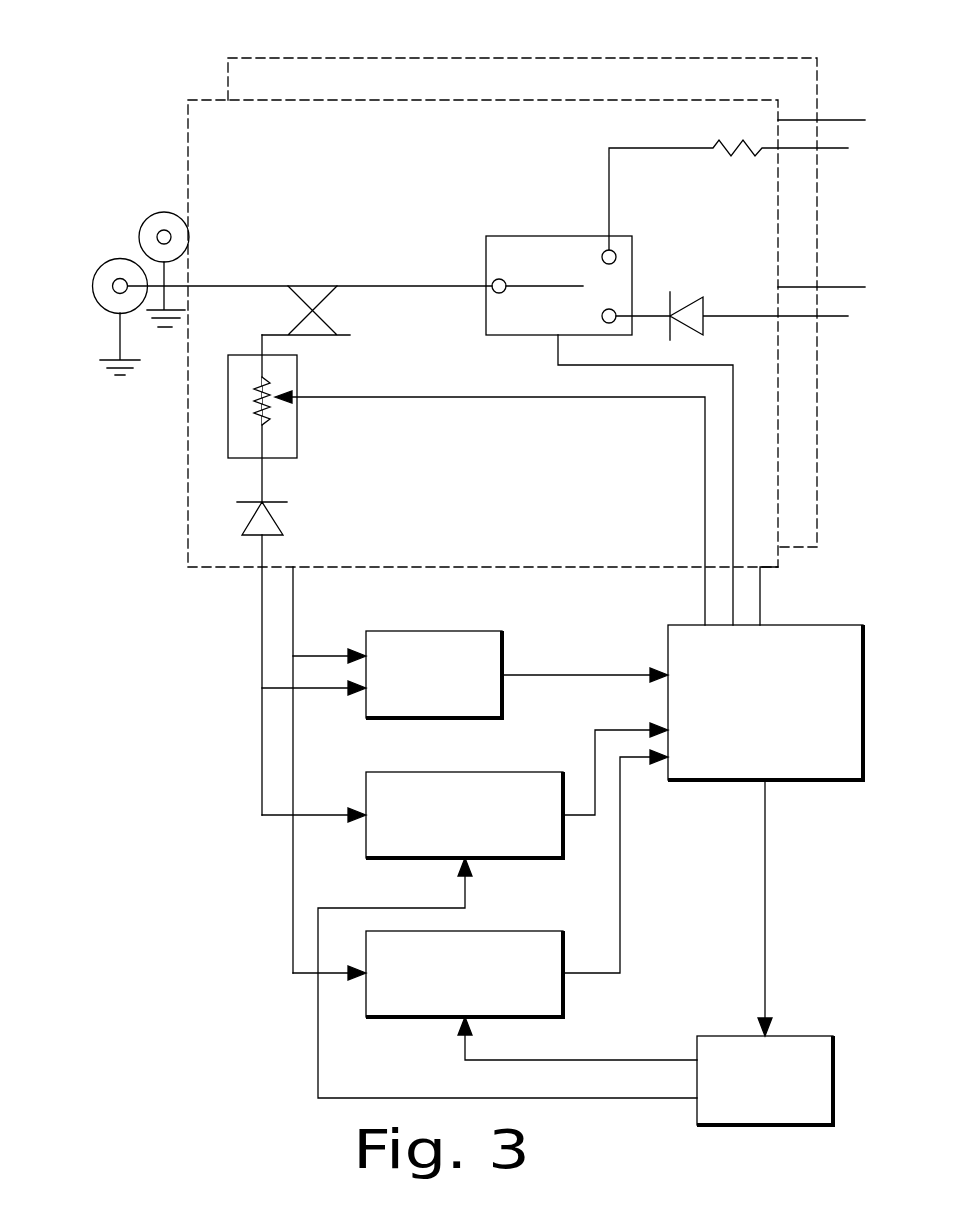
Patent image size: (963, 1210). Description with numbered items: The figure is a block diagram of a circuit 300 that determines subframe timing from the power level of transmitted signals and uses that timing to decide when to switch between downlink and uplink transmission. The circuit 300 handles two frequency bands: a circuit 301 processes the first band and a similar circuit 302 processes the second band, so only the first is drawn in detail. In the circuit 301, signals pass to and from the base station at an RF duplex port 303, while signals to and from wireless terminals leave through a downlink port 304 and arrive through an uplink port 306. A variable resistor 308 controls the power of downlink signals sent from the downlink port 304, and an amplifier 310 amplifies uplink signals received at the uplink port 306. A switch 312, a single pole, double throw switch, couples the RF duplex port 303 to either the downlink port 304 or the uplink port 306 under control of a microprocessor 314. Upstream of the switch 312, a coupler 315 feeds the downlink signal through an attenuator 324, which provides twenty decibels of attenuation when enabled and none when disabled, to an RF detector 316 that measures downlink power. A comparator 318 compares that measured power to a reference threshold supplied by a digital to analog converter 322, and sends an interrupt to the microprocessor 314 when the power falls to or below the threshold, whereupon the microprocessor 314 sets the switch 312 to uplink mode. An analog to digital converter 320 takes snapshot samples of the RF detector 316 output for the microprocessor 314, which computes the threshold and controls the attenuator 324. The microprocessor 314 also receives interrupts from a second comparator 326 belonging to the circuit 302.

The circuit 300 is at (130, 98).
The circuit 301 is at (204, 99).
The circuit 302 is at (243, 57).
The RF duplex port 303 is at (97, 308).
The downlink port 304 is at (848, 152).
The uplink port 306 is at (848, 318).
The variable resistor 308 is at (726, 145).
The amplifier 310 is at (684, 297).
The switch 312 is at (530, 235).
The microprocessor 314 is at (840, 624).
The coupler 315 is at (292, 304).
The RF detector 316 is at (250, 516).
The comparator 318 is at (525, 771).
The analog to digital converter 320 is at (465, 630).
The digital to analog converter 322 is at (810, 1035).
The attenuator 324 is at (297, 376).
The second comparator 326 is at (527, 930).